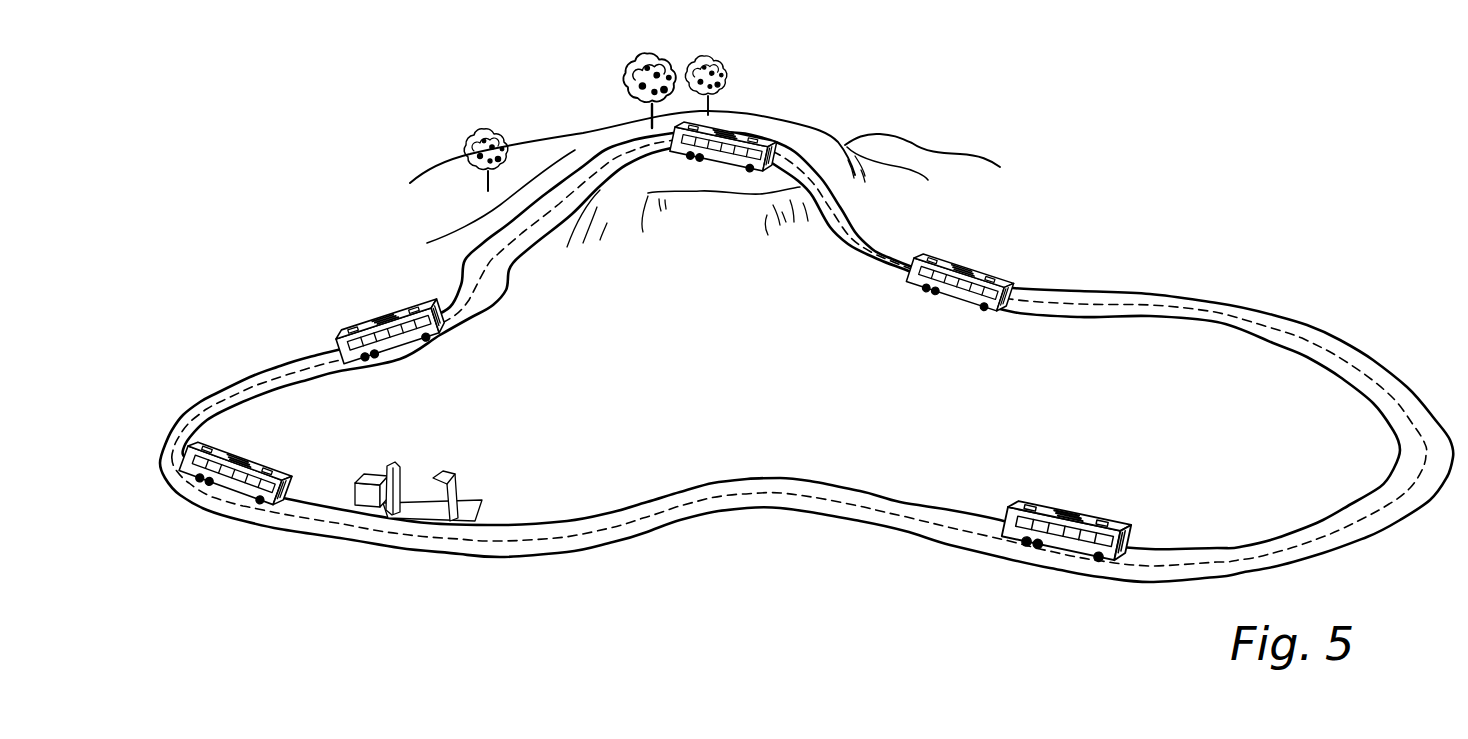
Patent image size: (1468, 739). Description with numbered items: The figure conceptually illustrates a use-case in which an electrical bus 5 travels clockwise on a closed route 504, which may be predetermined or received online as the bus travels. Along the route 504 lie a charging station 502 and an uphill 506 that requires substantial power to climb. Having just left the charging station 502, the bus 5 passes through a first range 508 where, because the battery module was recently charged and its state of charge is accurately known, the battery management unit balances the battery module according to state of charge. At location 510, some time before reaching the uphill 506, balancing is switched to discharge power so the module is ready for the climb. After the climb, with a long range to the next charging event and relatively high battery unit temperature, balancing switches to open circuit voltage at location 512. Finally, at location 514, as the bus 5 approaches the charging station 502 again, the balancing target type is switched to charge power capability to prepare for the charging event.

The electrical bus 5 is at (223, 480).
The charging station 502 is at (425, 463).
The route 504 is at (337, 530).
The uphill 506 is at (590, 147).
The first range 508 is at (217, 363).
The location before uphill 510 is at (450, 352).
The location after climb 512 is at (993, 258).
The location before charging event 514 is at (1032, 583).